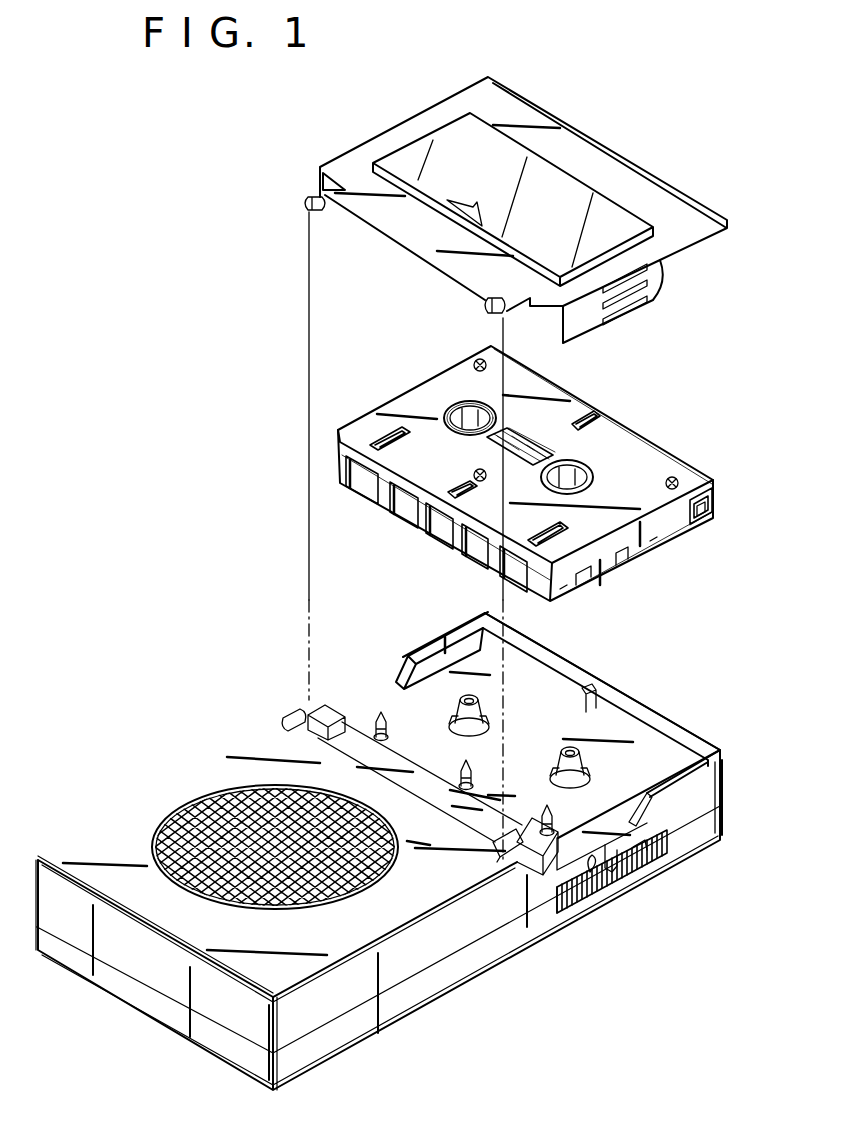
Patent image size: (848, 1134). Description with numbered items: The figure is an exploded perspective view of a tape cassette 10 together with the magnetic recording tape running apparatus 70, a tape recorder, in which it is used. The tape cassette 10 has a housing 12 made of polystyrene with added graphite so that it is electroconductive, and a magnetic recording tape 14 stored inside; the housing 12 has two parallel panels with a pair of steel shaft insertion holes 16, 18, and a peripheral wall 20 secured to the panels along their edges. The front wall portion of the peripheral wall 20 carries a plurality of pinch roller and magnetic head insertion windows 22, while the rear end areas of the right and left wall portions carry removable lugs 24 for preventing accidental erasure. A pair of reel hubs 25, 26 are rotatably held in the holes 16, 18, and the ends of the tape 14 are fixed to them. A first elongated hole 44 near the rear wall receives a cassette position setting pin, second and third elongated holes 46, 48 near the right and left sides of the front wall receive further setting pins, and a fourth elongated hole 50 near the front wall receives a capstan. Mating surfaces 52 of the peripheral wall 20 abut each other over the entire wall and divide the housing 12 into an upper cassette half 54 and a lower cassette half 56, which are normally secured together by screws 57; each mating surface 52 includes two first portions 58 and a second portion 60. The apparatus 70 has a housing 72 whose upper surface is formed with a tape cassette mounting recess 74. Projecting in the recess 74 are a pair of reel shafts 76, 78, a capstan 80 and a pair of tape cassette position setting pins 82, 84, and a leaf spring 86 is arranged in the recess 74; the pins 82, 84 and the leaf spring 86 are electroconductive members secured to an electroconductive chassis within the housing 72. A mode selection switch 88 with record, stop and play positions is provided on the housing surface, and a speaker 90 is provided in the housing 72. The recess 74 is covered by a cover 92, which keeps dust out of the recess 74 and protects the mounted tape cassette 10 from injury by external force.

The tape cassette 10 is at (610, 415).
The housing 12 is at (655, 443).
The magnetic recording tape 14 is at (438, 520).
The steel shaft insertion hole 16 is at (450, 418).
The steel shaft insertion hole 18 is at (592, 480).
The peripheral wall 20 is at (663, 533).
The pinch roller and magnetic head insertion windows 22 is at (373, 500).
The removable lugs 24 is at (697, 518).
The reel hub 25 is at (482, 404).
The reel hub 26 is at (570, 463).
The first elongated hole 44 is at (592, 425).
The second elongated hole 46 is at (400, 445).
The third elongated hole 48 is at (566, 531).
The fourth elongated hole 50 is at (472, 491).
The mating surfaces 52 is at (622, 560).
The upper cassette half 54 is at (713, 492).
The lower cassette half 56 is at (712, 510).
The screws 57 is at (476, 360).
The first portions 58 is at (587, 576).
The second portion 60 is at (563, 588).
The magnetic recording tape running apparatus 70 is at (152, 780).
The housing 72 is at (720, 796).
The tape cassette mounting recess 74 is at (415, 668).
The reel shaft 76 is at (457, 714).
The reel shaft 78 is at (556, 765).
The capstan 80 is at (460, 778).
The tape cassette position setting pin 82 is at (388, 730).
The tape cassette position setting pin 84 is at (553, 820).
The leaf spring 86 is at (596, 688).
The mode selection switch 88 is at (648, 865).
The speaker 90 is at (400, 866).
The cover 92 is at (562, 122).